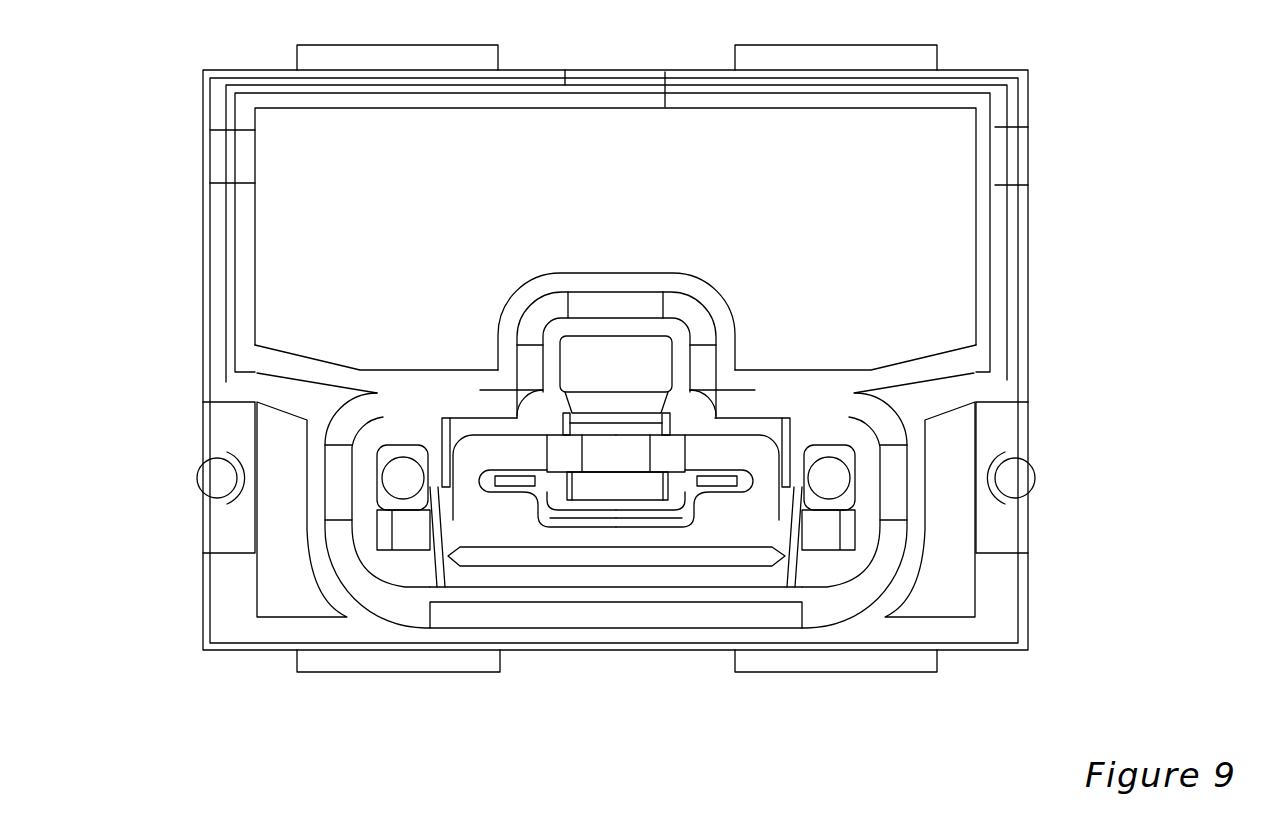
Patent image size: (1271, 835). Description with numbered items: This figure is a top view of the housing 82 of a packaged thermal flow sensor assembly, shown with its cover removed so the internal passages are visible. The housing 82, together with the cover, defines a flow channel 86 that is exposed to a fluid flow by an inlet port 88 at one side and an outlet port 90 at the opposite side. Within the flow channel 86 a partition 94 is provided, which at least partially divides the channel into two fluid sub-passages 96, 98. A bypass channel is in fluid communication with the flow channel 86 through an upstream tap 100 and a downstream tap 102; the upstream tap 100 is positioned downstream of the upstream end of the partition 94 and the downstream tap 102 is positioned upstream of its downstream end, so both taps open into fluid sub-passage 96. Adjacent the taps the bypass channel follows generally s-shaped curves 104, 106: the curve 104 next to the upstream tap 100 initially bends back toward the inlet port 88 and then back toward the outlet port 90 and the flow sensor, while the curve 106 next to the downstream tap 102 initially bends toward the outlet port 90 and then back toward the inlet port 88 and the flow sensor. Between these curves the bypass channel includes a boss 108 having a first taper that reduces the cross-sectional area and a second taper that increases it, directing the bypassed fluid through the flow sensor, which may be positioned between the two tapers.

The housing 82 is at (1030, 153).
The flow channel 86 is at (495, 570).
The inlet port 88 is at (397, 480).
The outlet port 90 is at (838, 478).
The partition 94 is at (572, 557).
The fluid sub-passage 96 is at (718, 538).
The fluid sub-passage 98 is at (657, 572).
The upstream tap 100 is at (532, 524).
The downstream tap 102 is at (703, 524).
The s-shaped curve 104 is at (477, 463).
The s-shaped curve 106 is at (767, 477).
The boss 108 is at (619, 458).